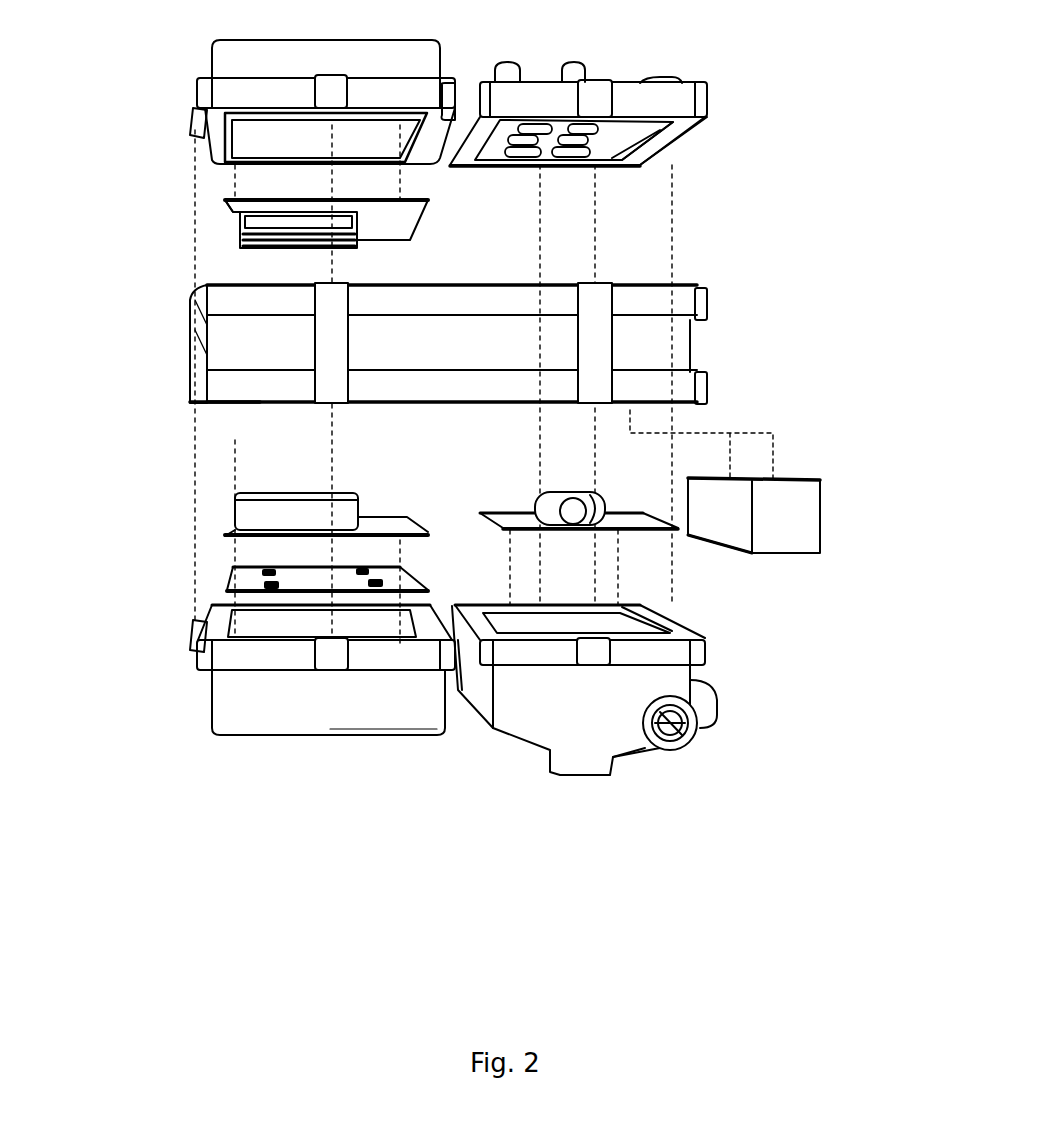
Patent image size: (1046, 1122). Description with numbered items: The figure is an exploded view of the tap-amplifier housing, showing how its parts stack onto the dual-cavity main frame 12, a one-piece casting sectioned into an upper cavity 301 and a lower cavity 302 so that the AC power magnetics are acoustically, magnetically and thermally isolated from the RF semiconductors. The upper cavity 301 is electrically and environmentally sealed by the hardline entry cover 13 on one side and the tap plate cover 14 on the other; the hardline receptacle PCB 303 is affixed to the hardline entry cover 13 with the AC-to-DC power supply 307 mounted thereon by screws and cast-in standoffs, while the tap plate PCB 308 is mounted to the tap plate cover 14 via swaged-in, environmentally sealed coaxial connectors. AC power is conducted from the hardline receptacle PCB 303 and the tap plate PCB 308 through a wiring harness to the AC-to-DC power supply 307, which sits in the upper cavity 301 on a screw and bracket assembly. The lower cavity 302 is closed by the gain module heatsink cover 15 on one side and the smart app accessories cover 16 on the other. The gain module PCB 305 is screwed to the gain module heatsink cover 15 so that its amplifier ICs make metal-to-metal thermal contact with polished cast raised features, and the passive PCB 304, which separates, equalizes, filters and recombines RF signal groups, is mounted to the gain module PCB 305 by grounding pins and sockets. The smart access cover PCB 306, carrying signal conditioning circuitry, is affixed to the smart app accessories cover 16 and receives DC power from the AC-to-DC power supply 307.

The dual-cavity main frame 12 is at (212, 335).
The hardline entry cover 13 is at (635, 750).
The tap plate cover 14 is at (700, 100).
The gain module heatsink cover 15 is at (235, 697).
The smart app accessories cover 16 is at (200, 80).
The upper cavity 301 is at (580, 402).
The lower cavity 302 is at (258, 403).
The hardline receptacle PCB 303 is at (620, 533).
The passive PCB 304 is at (232, 510).
The gain module PCB 305 is at (232, 568).
The smart access cover PCB 306 is at (228, 205).
The AC-to-DC power supply 307 is at (803, 512).
The tap plate PCB 308 is at (640, 150).